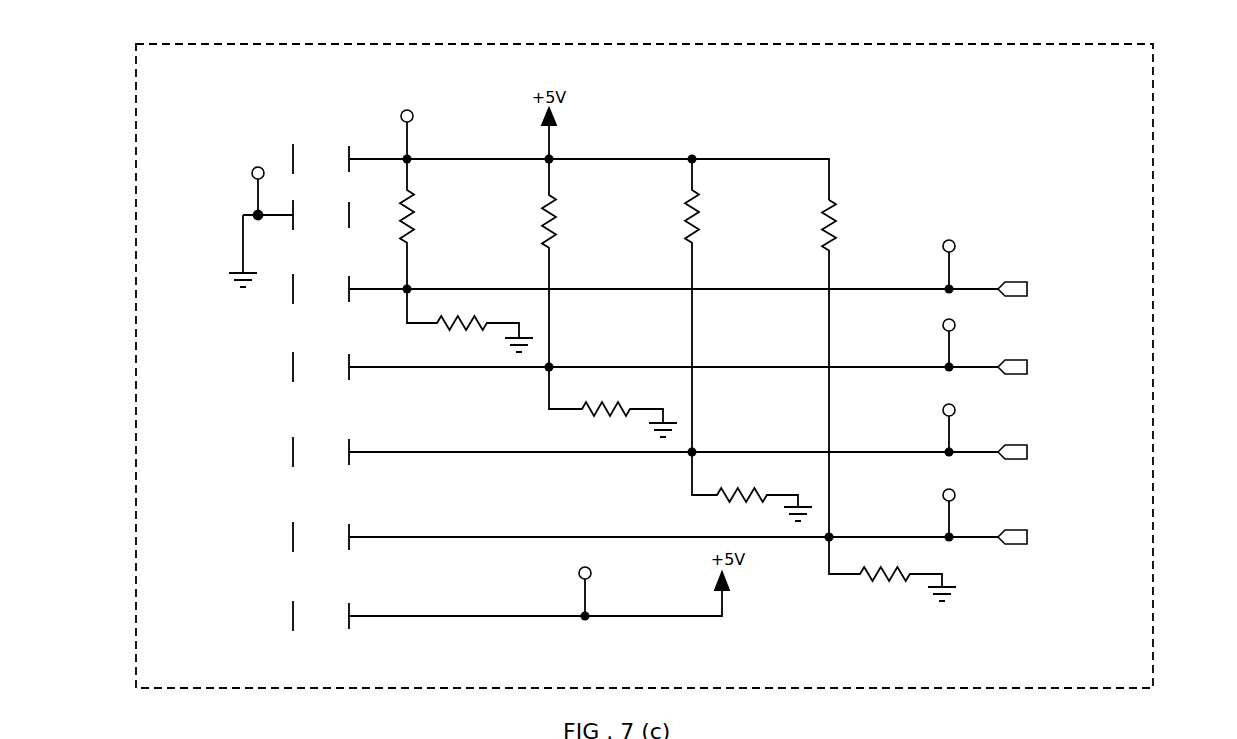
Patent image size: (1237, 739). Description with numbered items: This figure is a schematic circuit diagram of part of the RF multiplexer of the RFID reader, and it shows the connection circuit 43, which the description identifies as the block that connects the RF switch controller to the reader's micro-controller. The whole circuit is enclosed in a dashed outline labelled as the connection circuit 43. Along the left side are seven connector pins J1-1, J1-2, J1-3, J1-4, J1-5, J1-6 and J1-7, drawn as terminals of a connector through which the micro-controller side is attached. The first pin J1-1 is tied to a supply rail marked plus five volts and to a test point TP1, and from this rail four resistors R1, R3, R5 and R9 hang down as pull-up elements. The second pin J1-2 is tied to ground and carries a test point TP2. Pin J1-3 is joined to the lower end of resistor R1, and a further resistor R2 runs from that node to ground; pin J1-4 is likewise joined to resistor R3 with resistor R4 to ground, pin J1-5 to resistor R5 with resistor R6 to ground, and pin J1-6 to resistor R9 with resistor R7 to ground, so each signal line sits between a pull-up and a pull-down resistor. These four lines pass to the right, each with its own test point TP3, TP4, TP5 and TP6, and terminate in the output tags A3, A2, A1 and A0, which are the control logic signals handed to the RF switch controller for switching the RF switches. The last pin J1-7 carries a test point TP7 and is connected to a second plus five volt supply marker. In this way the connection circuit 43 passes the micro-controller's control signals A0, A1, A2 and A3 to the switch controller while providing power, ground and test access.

The connection circuit 43 is at (1153, 228).
The resistor R1 is at (396, 224).
The resistor R2 is at (470, 320).
The resistor R3 is at (538, 263).
The resistor R4 is at (613, 402).
The resistor R5 is at (681, 305).
The resistor R6 is at (752, 486).
The resistor R7 is at (892, 569).
The resistor R9 is at (818, 225).
The test point TP1 is at (406, 123).
The test point TP2 is at (241, 190).
The test point TP3 is at (932, 263).
The test point TP4 is at (932, 342).
The test point TP5 is at (932, 427).
The test point TP6 is at (932, 512).
The test point TP7 is at (584, 581).
The connector pin J1-1 is at (321, 159).
The connector pin J1-2 is at (321, 215).
The connector pin J1-3 is at (321, 289).
The connector pin J1-4 is at (321, 367).
The connector pin J1-5 is at (321, 452).
The connector pin J1-6 is at (321, 537).
The connector pin J1-7 is at (321, 616).
The address output A0 is at (1028, 531).
The address output A1 is at (1028, 446).
The address output A2 is at (1028, 361).
The address output A3 is at (1028, 283).